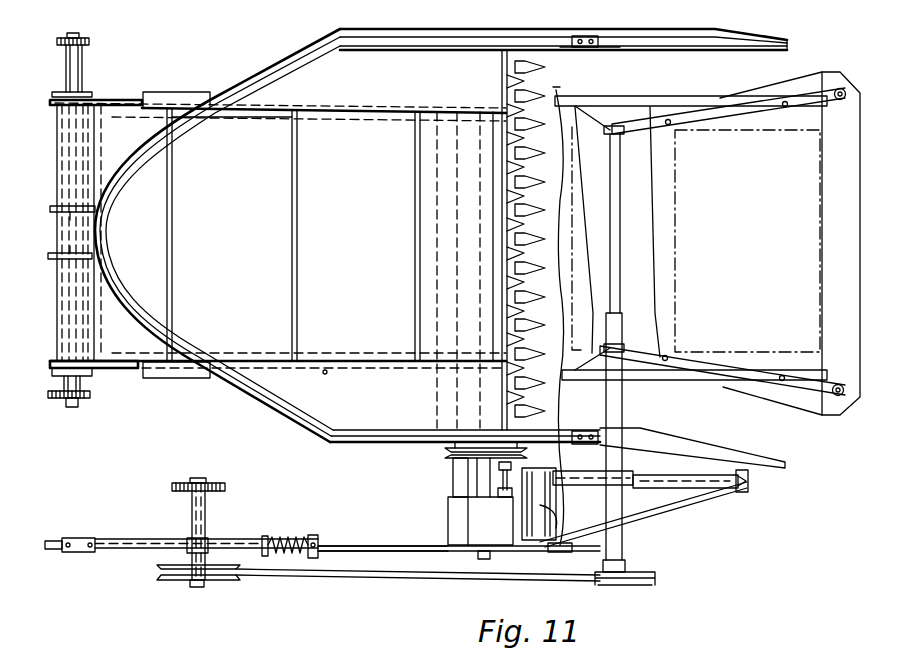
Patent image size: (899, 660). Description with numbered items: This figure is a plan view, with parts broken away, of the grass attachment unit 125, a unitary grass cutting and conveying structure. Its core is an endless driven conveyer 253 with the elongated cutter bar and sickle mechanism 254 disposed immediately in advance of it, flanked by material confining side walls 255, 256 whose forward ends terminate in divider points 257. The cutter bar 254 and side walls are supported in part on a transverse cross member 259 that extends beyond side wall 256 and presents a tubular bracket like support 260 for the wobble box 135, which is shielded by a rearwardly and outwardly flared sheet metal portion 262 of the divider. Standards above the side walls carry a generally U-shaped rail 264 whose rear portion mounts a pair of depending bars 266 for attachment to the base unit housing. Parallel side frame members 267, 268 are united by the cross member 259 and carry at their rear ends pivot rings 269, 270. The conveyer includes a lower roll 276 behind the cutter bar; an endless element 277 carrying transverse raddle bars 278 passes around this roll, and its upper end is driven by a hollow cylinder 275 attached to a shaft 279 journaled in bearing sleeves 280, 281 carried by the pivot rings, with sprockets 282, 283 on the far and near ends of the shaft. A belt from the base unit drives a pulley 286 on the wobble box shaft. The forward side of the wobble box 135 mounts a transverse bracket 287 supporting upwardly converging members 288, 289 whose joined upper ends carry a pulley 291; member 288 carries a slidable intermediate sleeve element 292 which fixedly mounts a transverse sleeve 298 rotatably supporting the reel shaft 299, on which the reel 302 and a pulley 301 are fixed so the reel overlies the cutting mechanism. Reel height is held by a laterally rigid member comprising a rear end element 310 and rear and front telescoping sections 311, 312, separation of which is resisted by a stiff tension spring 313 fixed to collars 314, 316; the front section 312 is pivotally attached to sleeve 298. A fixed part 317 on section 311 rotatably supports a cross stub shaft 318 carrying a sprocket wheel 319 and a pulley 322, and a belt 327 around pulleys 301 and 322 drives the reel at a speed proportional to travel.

The grass attachment unit 125 is at (350, 88).
The wobble box 135 is at (470, 540).
The endless driven conveyer 253 is at (440, 96).
The cutter bar and sickle mechanism 254 is at (540, 70).
The side wall 255 is at (340, 118).
The side wall 256 is at (312, 355).
The divider points 257 is at (646, 38).
The transverse cross member 259 is at (453, 488).
The tubular bracket like support 260 is at (448, 510).
The flared sheet metal portion 262 is at (532, 554).
The U-shaped rail 264 is at (110, 305).
The bars 266 is at (82, 212).
The side frame member 267 is at (243, 122).
The side frame member 268 is at (256, 351).
The pivot ring 269 is at (96, 100).
The pivot ring 270 is at (86, 370).
The hollow cylinder 275 is at (85, 337).
The lower roll 276 is at (480, 128).
The endless element 277 is at (388, 366).
The raddle bars 278 is at (292, 255).
The shaft 279 is at (72, 408).
The bearing sleeve 280 is at (78, 90).
The bearing sleeve 281 is at (82, 392).
The sprocket 282 is at (86, 42).
The sprocket 283 is at (90, 400).
The pulley 286 is at (445, 452).
The transverse bracket 287 is at (543, 504).
The upwardly converging member 288 is at (680, 478).
The upwardly converging member 289 is at (690, 506).
The pulley 291 is at (740, 492).
The intermediate sleeve element 292 is at (585, 473).
The transverse sleeve 298 is at (624, 550).
The reel shaft 299 is at (618, 170).
The pulley 301 is at (640, 586).
The reel 302 is at (766, 204).
The rear end element 310 is at (78, 538).
The rear telescoping section 311 is at (146, 539).
The front telescoping section 312 is at (363, 546).
The tension spring 313 is at (290, 538).
The collar 314 is at (263, 539).
The collar 316 is at (318, 552).
The fixed part 317 is at (190, 511).
The cross stub shaft 318 is at (198, 589).
The sprocket wheel 319 is at (190, 482).
The pulley 322 is at (166, 581).
The belt 327 is at (390, 580).